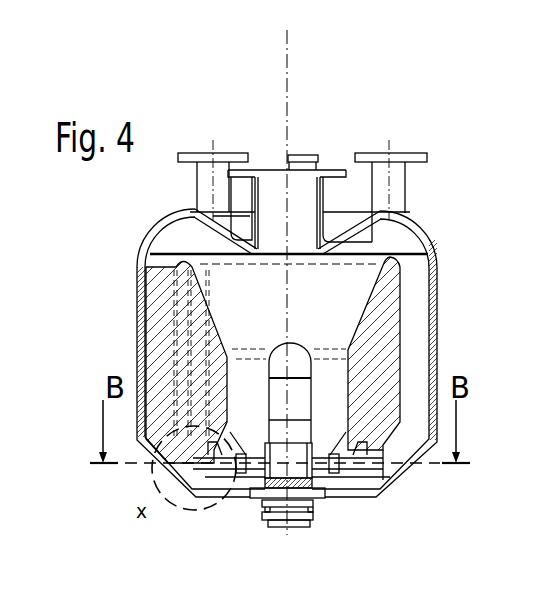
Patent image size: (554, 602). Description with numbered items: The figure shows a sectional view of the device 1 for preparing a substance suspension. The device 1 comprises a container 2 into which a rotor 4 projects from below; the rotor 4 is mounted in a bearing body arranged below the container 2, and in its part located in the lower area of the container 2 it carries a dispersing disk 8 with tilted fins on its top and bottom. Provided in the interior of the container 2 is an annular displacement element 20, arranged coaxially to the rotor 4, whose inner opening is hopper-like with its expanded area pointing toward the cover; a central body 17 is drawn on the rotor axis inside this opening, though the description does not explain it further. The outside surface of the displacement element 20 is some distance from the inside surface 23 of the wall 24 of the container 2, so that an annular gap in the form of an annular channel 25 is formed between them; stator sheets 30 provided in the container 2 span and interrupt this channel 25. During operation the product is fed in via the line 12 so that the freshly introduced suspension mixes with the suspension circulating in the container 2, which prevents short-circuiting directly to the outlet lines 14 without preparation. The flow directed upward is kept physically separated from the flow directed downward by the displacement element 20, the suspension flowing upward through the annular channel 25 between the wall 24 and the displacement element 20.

The device 1 is at (133, 288).
The container 2 is at (137, 266).
The rotor 4 is at (323, 410).
The dispersing disk 8 is at (263, 470).
The line 12 is at (300, 178).
The outlet lines 14 is at (220, 162).
The central displacement body 17 is at (293, 358).
The displacement element 20 is at (378, 341).
The inside surface of the wall 23 is at (147, 353).
The wall 24 is at (437, 282).
The annular channel 25 is at (411, 248).
The stator sheets 30 is at (412, 347).